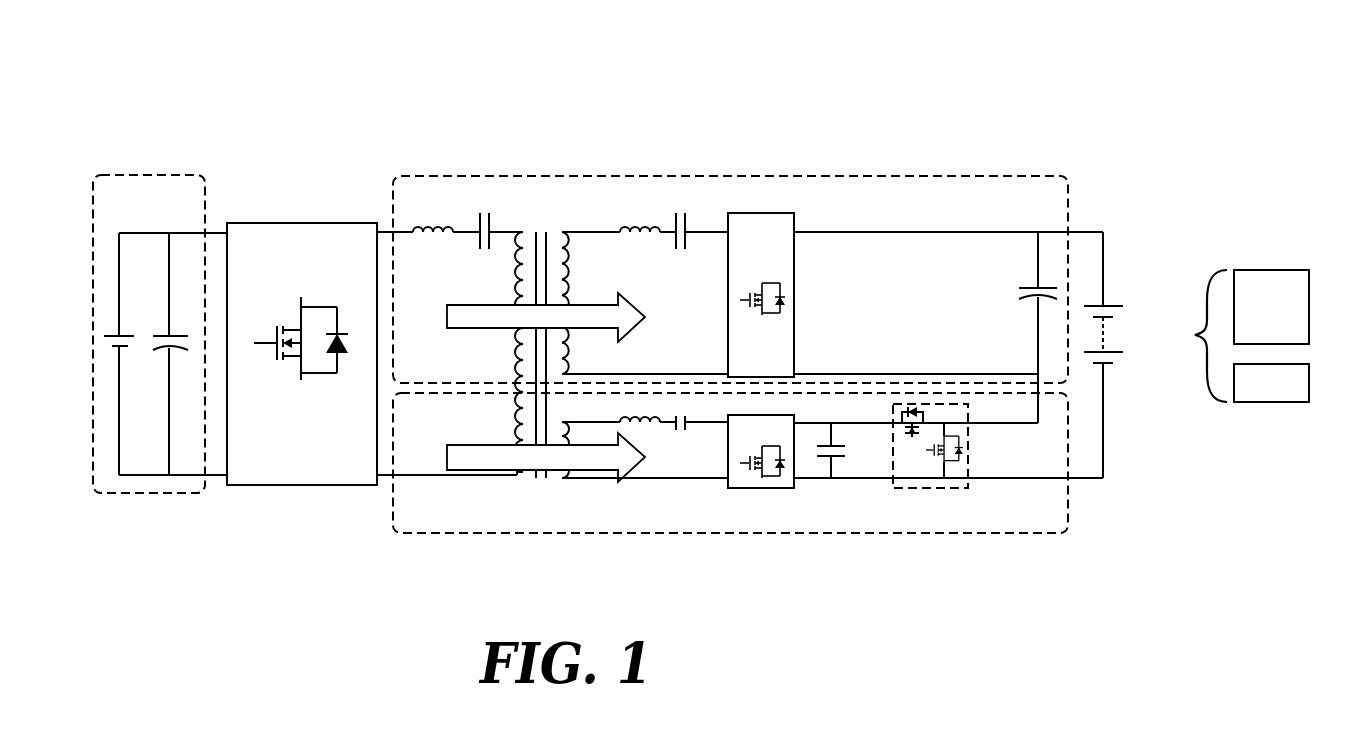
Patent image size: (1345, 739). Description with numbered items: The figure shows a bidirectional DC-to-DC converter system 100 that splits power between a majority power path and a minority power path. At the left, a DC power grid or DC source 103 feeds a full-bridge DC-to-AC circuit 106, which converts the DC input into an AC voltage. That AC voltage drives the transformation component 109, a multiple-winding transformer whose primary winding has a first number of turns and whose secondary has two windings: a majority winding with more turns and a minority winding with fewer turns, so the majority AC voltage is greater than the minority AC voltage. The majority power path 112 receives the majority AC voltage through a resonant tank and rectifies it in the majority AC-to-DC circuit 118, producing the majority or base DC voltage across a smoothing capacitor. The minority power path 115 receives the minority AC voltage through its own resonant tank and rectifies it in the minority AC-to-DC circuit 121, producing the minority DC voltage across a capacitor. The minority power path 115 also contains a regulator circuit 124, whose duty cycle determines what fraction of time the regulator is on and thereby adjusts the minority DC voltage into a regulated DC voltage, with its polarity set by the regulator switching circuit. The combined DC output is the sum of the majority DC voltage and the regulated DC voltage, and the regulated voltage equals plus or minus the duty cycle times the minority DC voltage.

The DC-to-DC converter system 100 is at (706, 294).
The DC source 103 is at (134, 207).
The DC-to-AC circuit 106 is at (287, 252).
The transformation component 109 is at (553, 208).
The majority power path 112 is at (740, 329).
The minority power path 115 is at (748, 463).
The majority AC-to-DC circuit 118 is at (746, 240).
The minority AC-to-DC circuit 121 is at (746, 437).
The regulator circuit 124 is at (956, 506).